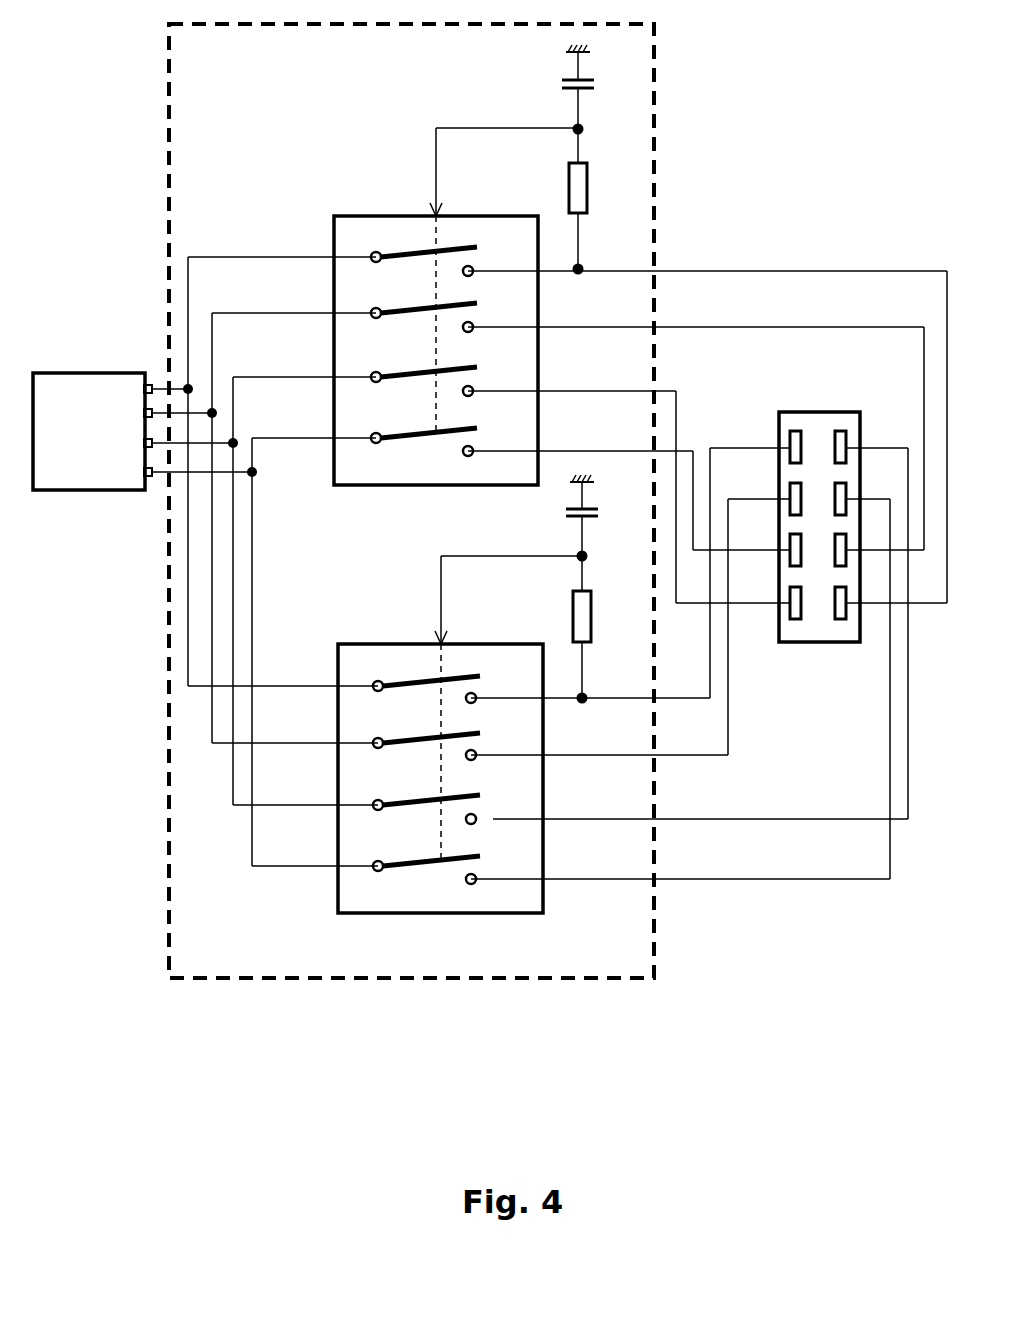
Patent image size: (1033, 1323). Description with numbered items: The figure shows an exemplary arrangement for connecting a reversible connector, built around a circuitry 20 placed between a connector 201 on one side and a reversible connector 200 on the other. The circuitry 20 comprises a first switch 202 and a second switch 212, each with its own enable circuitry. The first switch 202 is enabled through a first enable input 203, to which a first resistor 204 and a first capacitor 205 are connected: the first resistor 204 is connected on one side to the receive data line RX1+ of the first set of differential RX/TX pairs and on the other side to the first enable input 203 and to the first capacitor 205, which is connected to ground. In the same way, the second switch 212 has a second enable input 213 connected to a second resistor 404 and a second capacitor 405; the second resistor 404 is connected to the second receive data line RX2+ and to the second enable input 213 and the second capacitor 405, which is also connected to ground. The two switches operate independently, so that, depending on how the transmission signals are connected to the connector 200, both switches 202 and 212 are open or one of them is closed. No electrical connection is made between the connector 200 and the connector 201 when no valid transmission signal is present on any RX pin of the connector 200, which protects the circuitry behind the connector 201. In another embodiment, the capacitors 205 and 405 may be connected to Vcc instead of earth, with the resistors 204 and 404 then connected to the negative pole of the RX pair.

The circuitry 20 is at (214, 968).
The connector 200 is at (846, 687).
The connector 201 is at (106, 530).
The first switch 202 is at (392, 525).
The first enable input 203 is at (486, 197).
The first resistor 204 is at (564, 200).
The first capacitor 205 is at (552, 103).
The second switch 212 is at (392, 949).
The second enable input 213 is at (493, 628).
The second resistor 404 is at (567, 632).
The second capacitor 405 is at (557, 528).